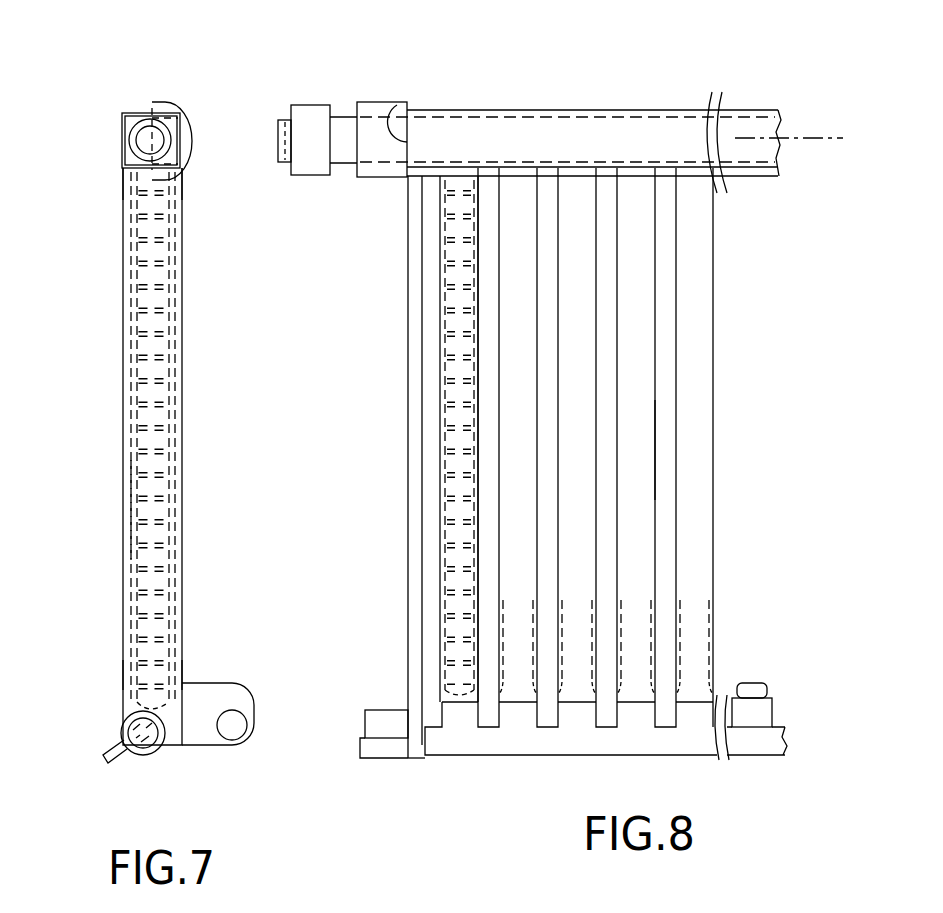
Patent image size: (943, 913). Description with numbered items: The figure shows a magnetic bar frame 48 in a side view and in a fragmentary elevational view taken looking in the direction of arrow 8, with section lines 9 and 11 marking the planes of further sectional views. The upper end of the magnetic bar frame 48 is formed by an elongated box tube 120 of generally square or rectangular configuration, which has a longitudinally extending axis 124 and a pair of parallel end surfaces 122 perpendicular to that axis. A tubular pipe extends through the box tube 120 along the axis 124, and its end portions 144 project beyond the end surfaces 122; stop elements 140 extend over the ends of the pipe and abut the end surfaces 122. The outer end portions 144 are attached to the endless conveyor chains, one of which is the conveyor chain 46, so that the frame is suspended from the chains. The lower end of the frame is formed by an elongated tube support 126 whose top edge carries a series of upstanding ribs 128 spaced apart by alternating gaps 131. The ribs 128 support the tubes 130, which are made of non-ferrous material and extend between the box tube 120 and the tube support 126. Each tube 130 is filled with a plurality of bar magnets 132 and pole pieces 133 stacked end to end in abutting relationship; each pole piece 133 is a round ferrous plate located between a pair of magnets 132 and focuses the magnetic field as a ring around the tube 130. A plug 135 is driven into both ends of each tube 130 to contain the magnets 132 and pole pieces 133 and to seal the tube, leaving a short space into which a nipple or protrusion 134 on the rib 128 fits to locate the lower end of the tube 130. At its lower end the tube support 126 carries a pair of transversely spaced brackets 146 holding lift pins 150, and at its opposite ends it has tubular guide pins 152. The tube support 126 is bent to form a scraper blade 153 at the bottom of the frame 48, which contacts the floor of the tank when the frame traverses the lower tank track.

In FIG. 8, the endless conveyor chain 46 is at (303, 105).
In FIG. 7, the magnetic bar frame 48 is at (97, 388).
In FIG. 8, the magnetic bar frame 48 is at (738, 533).
In FIG. 8, the box tube 120 is at (560, 110).
In FIG. 8, the end surfaces 122 is at (393, 108).
In FIG. 8, the longitudinal axis 124 is at (828, 140).
In FIG. 8, the tube support 126 is at (762, 745).
In FIG. 8, the ribs 128 is at (453, 717).
In FIG. 8, the tubes 130 is at (440, 400).
In FIG. 8, the gaps 131 is at (667, 472).
In FIG. 7, the bar magnets 132 is at (145, 528).
In FIG. 8, the bar magnets 132 is at (445, 547).
In FIG. 7, the pole piece 133 is at (137, 452).
In FIG. 8, the protrusion 134 is at (747, 682).
In FIG. 7, the plug 135 is at (140, 198).
In FIG. 7, the stop elements 140 is at (160, 102).
In FIG. 8, the stop elements 140 is at (377, 177).
In FIG. 8, the end portions 144 is at (345, 117).
In FIG. 7, the brackets 146 is at (218, 683).
In FIG. 7, the lift pins 150 is at (232, 710).
In FIG. 8, the lift pins 150 is at (383, 710).
In FIG. 7, the tubular guide pins 152 is at (122, 727).
In FIG. 8, the tubular guide pins 152 is at (362, 743).
In FIG. 7, the scraper blade 153 is at (98, 757).
In FIG. 8, the scraper blade 153 is at (428, 758).
In FIG. 7, the viewing direction arrow 8 is at (230, 430).
In FIG. 7, the section line 9 is at (82, 774).
In FIG. 8, the section line 11 is at (460, 147).